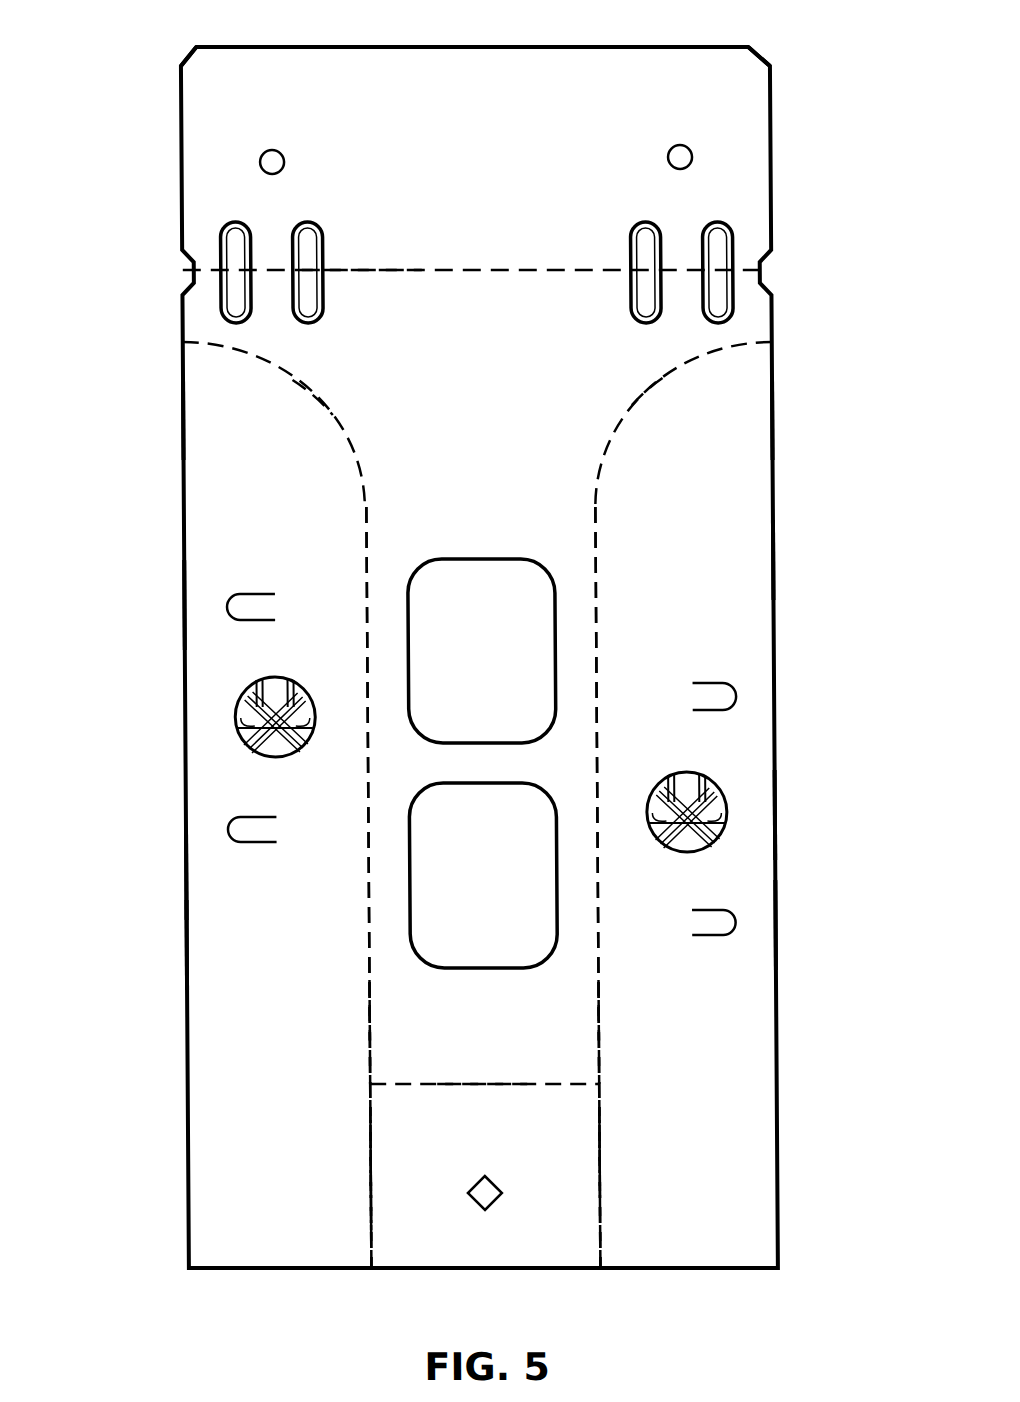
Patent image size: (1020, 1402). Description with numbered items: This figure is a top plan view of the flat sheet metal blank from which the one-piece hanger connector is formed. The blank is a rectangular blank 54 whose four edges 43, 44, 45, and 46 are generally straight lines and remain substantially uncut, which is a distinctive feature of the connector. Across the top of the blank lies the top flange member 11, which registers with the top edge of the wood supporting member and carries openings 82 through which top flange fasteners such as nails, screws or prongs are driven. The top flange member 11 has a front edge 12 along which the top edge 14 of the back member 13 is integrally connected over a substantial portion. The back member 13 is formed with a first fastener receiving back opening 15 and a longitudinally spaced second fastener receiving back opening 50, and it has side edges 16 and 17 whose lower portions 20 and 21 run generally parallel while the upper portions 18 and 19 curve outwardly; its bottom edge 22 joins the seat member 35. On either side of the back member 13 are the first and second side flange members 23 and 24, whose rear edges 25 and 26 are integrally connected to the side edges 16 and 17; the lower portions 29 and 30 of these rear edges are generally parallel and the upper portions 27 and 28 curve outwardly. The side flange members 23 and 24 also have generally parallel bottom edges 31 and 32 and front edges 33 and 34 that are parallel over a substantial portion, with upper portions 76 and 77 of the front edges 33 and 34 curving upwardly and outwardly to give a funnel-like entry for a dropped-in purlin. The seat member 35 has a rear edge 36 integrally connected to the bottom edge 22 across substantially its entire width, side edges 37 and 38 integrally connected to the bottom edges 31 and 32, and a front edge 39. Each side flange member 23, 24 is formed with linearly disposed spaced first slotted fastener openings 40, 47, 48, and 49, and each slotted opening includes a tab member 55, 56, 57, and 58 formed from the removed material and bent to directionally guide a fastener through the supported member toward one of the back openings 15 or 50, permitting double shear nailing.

The top flange member 11 is at (467, 47).
The front edge 12 is at (362, 271).
The back member 13 is at (461, 469).
The top edge 14 is at (475, 268).
The first fastener receiving back opening 15 is at (478, 575).
The side edge 16 is at (350, 790).
The side edge 17 is at (606, 753).
The upper portion 18 is at (300, 390).
The upper portion 19 is at (666, 382).
The lower portion 20 is at (365, 1048).
The lower portion 21 is at (603, 1048).
The bottom edge 22 is at (515, 1085).
The first side flange member 23 is at (170, 873).
The second side flange member 24 is at (779, 814).
The rear edge 25 is at (376, 753).
The rear edge 26 is at (580, 773).
The upper portion 27 is at (322, 398).
The upper portion 28 is at (644, 390).
The lower portion 29 is at (372, 1020).
The lower portion 30 is at (598, 1010).
The bottom edge 31 is at (375, 1185).
The bottom edge 32 is at (596, 1180).
The front edge 33 is at (181, 940).
The front edge 34 is at (770, 925).
The seat member 35 is at (464, 1251).
The rear edge 36 is at (472, 1084).
The side edge 37 is at (368, 1160).
The side edge 38 is at (604, 1150).
The front edge 39 is at (535, 1268).
The first slotted fastener opening 40 is at (252, 842).
The edge of blank 43 is at (172, 606).
The edge of blank 44 is at (306, 46).
The edge of blank 45 is at (778, 558).
The edge of blank 46 is at (324, 1277).
The first slotted fastener opening 47 is at (258, 625).
The first slotted fastener opening 48 is at (700, 935).
The first slotted fastener opening 49 is at (712, 706).
The second fastener receiving back opening 50 is at (463, 963).
The rectangular blank 54 is at (769, 47).
The tab member 55 is at (240, 817).
The tab member 56 is at (255, 610).
The tab member 57 is at (715, 910).
The tab member 58 is at (712, 700).
The upper portion 76 is at (181, 420).
The upper portion 77 is at (770, 418).
The opening 82 is at (280, 154).